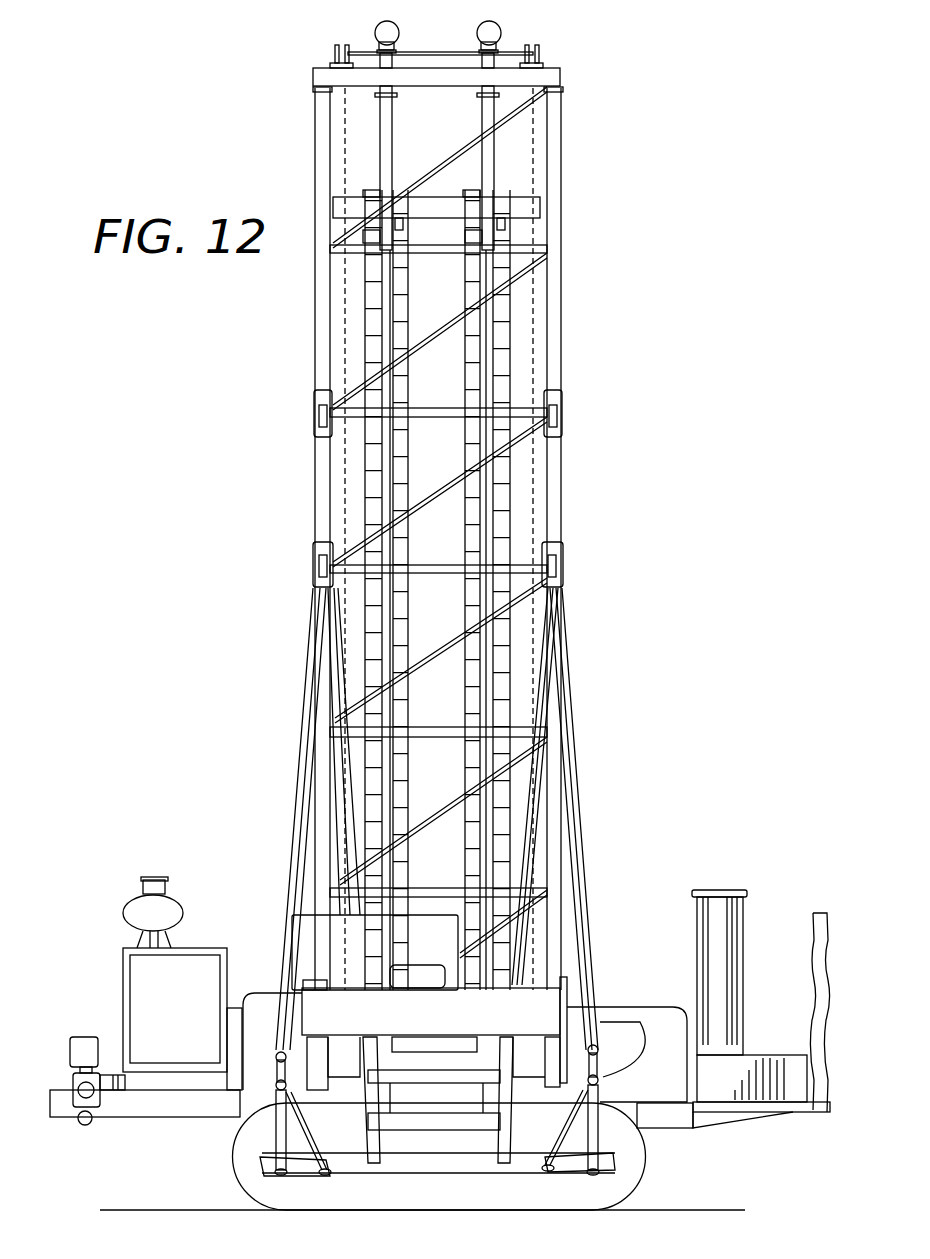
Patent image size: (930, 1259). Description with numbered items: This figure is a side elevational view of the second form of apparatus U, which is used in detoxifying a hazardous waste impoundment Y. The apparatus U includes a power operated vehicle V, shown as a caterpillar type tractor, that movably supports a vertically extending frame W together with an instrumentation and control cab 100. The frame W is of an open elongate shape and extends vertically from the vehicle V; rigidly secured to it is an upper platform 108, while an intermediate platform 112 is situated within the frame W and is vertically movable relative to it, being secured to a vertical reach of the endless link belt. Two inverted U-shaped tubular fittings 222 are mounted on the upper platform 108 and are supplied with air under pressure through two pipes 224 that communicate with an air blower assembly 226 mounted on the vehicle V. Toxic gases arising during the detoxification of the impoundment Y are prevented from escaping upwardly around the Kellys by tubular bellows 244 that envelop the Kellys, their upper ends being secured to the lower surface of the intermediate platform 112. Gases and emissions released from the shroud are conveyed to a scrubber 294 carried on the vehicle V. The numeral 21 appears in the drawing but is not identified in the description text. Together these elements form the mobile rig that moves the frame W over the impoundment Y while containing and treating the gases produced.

The view direction of FIG. 21 is at (523, 40).
The upper platform 108 is at (553, 77).
The intermediate platform 112 is at (530, 208).
The inverted U-shaped tubular fittings 222 is at (487, 27).
The pipes 224 is at (387, 440).
The tubular bellows 244 is at (470, 585).
The air blower assembly 226 is at (200, 950).
The scrubber 294 is at (697, 932).
The instrumentation and control cab 100 is at (813, 965).
The frame W is at (557, 317).
The apparatus U is at (574, 543).
The power operated vehicle V is at (652, 1120).
The hazardous waste impoundment Y is at (650, 1203).